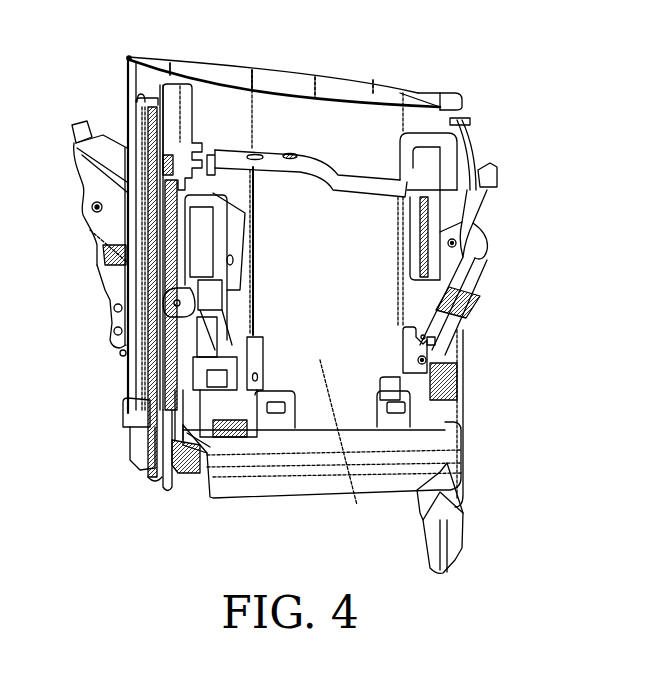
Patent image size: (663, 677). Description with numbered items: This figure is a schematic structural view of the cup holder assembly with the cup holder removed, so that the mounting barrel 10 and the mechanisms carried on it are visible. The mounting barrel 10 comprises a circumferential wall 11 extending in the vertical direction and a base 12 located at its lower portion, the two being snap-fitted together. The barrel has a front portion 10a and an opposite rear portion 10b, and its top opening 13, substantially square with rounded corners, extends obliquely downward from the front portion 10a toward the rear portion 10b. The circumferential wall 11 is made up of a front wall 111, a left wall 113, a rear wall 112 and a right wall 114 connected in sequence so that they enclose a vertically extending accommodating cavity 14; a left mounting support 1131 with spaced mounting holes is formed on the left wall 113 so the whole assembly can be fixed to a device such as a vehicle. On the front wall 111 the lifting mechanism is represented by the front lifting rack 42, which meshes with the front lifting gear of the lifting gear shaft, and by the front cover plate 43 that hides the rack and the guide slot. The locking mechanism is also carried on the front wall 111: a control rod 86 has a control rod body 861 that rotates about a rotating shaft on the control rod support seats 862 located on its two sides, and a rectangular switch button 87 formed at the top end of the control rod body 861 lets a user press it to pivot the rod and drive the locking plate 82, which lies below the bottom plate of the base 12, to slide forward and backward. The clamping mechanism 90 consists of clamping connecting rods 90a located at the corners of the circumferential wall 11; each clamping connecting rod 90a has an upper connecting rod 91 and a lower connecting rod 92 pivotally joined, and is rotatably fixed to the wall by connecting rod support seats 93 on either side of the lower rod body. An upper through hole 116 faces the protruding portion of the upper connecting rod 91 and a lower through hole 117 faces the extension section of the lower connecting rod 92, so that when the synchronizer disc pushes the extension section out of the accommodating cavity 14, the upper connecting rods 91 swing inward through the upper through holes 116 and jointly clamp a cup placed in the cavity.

The mounting barrel 10 is at (219, 62).
The front portion 10a is at (127, 57).
The rear portion 10b is at (404, 82).
The circumferential wall 11 is at (226, 101).
The front wall 111 is at (152, 80).
The rear wall 112 is at (413, 97).
The left wall 113 is at (320, 385).
The left mounting support 1131 is at (311, 149).
The right wall 114 is at (263, 80).
The upper through hole 116 is at (456, 277).
The lower through hole 117 is at (462, 381).
The base 12 is at (291, 478).
The top opening 13 is at (372, 82).
The accommodating cavity 14 is at (235, 86).
The front lifting rack 42 is at (127, 205).
The front cover plate 43 is at (135, 127).
The locking plate 82 is at (193, 474).
The control rod 86 is at (143, 372).
The control rod body 861 is at (150, 397).
The control rod support seat 862 is at (140, 305).
The switch button 87 is at (163, 145).
The clamping mechanism 90 is at (491, 224).
The clamping connecting rod 90a is at (499, 178).
The upper connecting rod 91 is at (488, 241).
The lower connecting rod 92 is at (462, 325).
The connecting rod support seat 93 is at (412, 357).